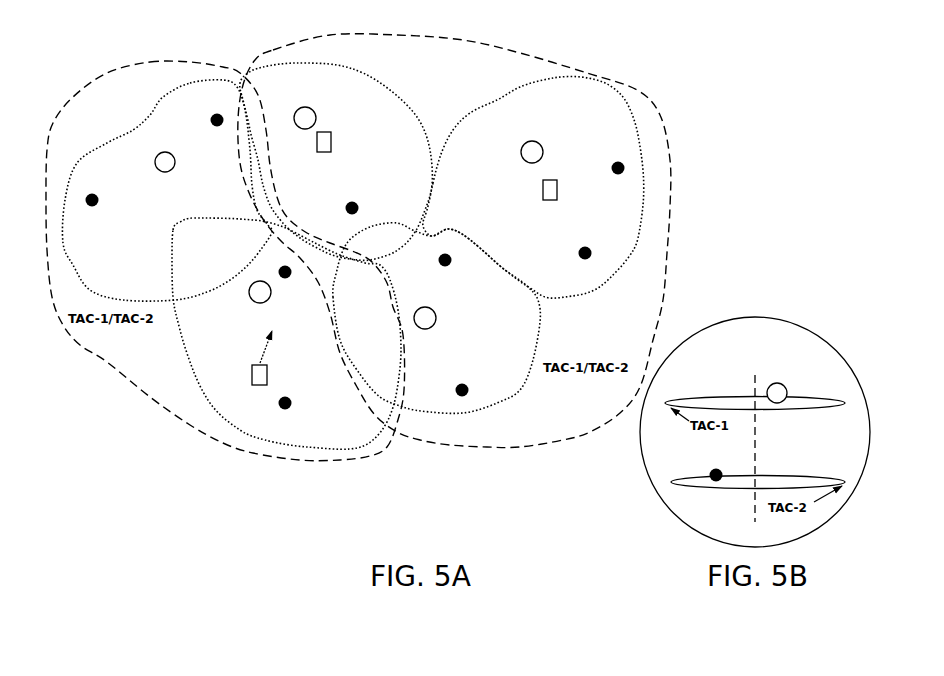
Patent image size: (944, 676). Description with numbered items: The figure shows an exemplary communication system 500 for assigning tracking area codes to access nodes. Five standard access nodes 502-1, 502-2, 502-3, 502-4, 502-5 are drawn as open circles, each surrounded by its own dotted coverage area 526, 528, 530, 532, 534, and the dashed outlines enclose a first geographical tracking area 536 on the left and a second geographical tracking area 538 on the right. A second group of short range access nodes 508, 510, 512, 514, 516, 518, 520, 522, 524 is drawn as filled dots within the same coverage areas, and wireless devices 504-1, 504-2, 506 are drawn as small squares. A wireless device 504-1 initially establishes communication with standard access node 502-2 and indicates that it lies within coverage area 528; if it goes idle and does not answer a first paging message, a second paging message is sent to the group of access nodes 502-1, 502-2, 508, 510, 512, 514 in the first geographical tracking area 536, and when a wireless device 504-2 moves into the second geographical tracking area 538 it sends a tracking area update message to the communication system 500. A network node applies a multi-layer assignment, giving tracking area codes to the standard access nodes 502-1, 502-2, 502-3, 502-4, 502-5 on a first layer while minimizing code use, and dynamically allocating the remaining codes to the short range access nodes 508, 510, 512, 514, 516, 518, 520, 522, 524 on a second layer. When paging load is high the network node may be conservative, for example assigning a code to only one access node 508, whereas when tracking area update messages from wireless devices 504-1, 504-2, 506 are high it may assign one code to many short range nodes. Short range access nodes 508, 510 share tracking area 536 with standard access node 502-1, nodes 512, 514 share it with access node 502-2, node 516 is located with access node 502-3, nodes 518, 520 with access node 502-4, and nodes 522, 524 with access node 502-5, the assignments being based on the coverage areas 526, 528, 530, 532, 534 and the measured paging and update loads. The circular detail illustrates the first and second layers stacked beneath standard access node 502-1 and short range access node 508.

In FIG. 5A, the communication system 500 is at (90, 522).
In FIG. 5A, the standard access node 502-1 is at (167, 172).
In FIG. 5B, the standard access node 502-1 is at (772, 384).
In FIG. 5A, the standard access node 502-2 is at (260, 303).
In FIG. 5A, the standard access node 502-3 is at (313, 110).
In FIG. 5A, the standard access node 502-4 is at (433, 310).
In FIG. 5A, the standard access node 502-5 is at (528, 141).
In FIG. 5A, the wireless device 504-1 is at (252, 370).
In FIG. 5A, the wireless device 504-2 is at (317, 140).
In FIG. 5A, the wireless device 506 is at (543, 184).
In FIG. 5A, the short range access node 508 is at (92, 206).
In FIG. 5B, the short range access node 508 is at (715, 468).
In FIG. 5A, the short range access node 510 is at (216, 114).
In FIG. 5A, the short range access node 512 is at (286, 410).
In FIG. 5A, the short range access node 514 is at (285, 279).
In FIG. 5A, the short range access node 516 is at (351, 202).
In FIG. 5A, the short range access node 518 is at (465, 383).
In FIG. 5A, the short range access node 520 is at (442, 264).
In FIG. 5A, the short range access node 522 is at (588, 248).
In FIG. 5A, the short range access node 524 is at (617, 162).
In FIG. 5A, the coverage area 526 is at (141, 131).
In FIG. 5A, the coverage area 528 is at (173, 328).
In FIG. 5A, the coverage area 530 is at (355, 74).
In FIG. 5A, the coverage area 532 is at (502, 398).
In FIG. 5A, the coverage area 534 is at (497, 100).
In FIG. 5A, the first geographical tracking area 536 is at (91, 80).
In FIG. 5A, the second geographical tracking area 538 is at (637, 89).